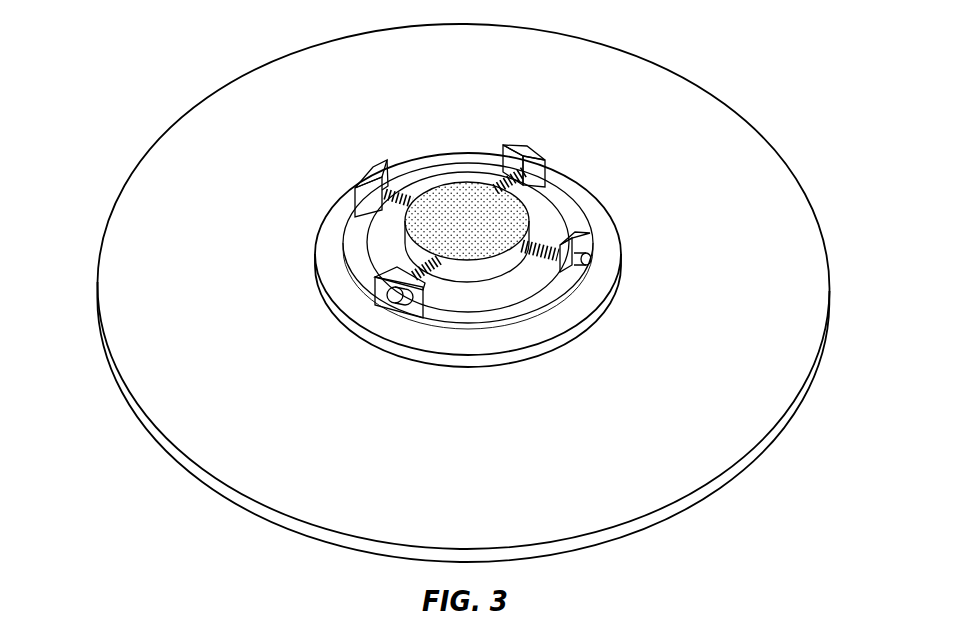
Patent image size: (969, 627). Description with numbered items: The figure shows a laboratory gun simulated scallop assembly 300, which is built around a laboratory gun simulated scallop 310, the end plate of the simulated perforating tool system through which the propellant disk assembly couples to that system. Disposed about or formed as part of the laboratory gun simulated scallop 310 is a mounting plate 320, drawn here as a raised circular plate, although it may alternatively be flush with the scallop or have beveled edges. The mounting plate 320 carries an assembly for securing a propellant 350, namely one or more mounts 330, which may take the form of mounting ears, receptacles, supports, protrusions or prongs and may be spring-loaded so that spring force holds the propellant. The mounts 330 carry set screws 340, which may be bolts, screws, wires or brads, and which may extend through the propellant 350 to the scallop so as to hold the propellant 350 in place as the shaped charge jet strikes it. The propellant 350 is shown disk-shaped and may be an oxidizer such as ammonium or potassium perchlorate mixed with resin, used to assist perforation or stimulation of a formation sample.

The laboratory gun simulated scallop assembly 300 is at (736, 45).
The laboratory gun simulated scallop 310 is at (725, 455).
The mounting plate 320 is at (330, 238).
The mount 330 is at (378, 182).
The set screw 340 is at (500, 178).
The propellant 350 is at (476, 232).